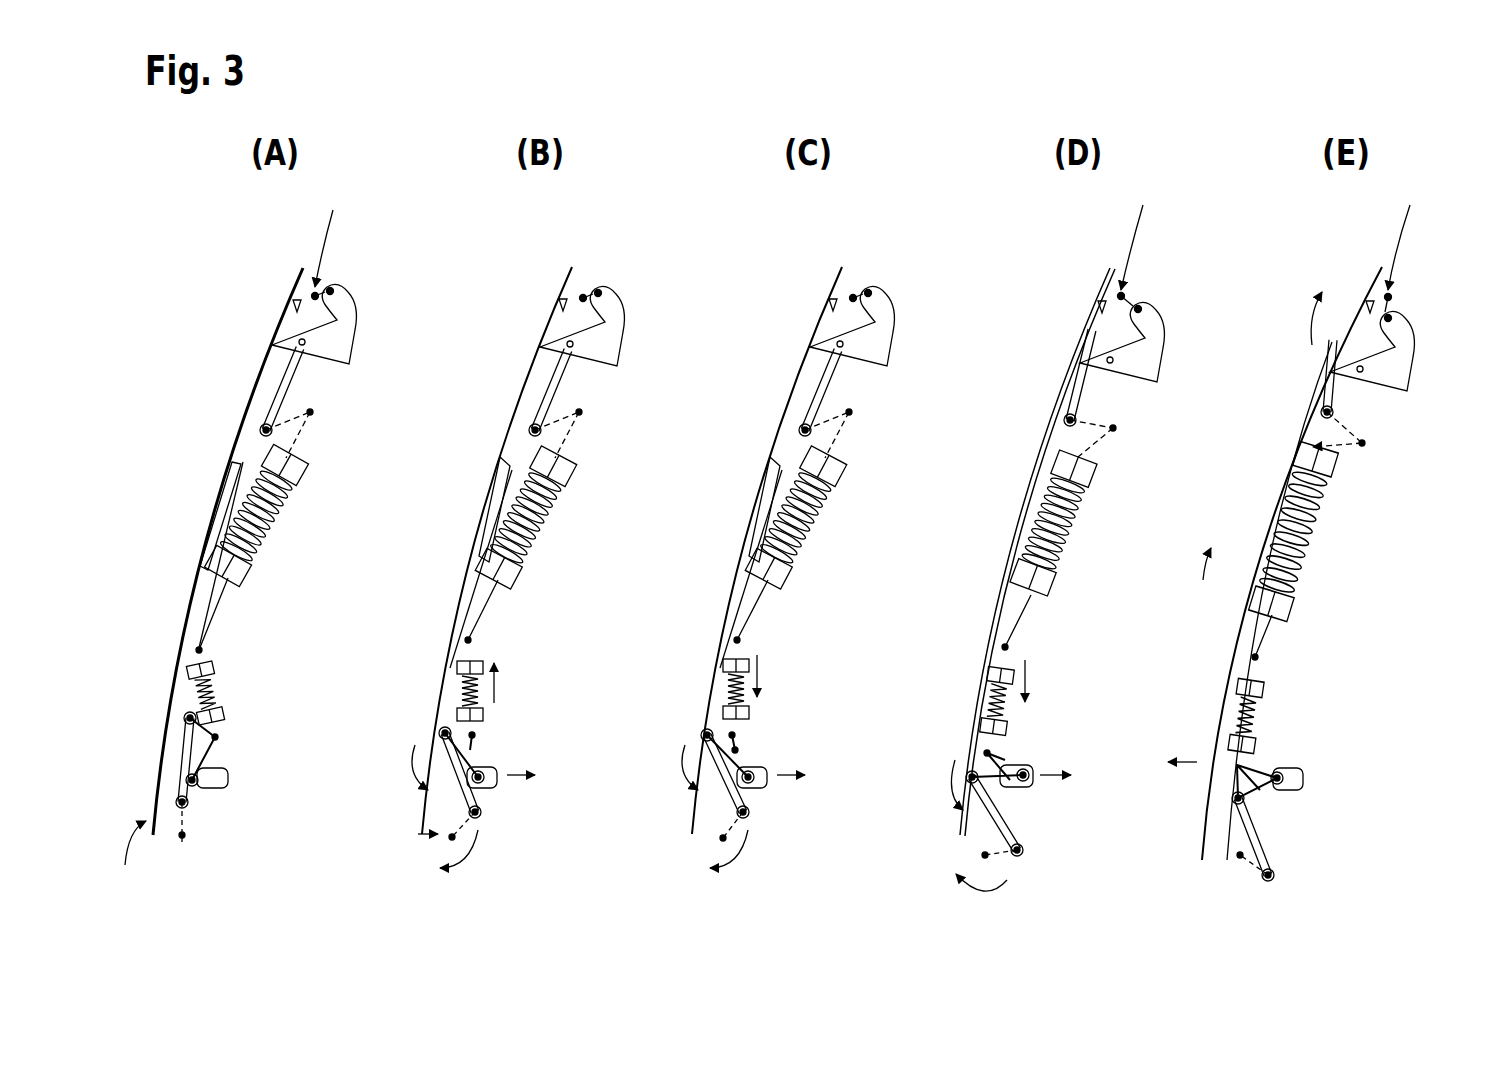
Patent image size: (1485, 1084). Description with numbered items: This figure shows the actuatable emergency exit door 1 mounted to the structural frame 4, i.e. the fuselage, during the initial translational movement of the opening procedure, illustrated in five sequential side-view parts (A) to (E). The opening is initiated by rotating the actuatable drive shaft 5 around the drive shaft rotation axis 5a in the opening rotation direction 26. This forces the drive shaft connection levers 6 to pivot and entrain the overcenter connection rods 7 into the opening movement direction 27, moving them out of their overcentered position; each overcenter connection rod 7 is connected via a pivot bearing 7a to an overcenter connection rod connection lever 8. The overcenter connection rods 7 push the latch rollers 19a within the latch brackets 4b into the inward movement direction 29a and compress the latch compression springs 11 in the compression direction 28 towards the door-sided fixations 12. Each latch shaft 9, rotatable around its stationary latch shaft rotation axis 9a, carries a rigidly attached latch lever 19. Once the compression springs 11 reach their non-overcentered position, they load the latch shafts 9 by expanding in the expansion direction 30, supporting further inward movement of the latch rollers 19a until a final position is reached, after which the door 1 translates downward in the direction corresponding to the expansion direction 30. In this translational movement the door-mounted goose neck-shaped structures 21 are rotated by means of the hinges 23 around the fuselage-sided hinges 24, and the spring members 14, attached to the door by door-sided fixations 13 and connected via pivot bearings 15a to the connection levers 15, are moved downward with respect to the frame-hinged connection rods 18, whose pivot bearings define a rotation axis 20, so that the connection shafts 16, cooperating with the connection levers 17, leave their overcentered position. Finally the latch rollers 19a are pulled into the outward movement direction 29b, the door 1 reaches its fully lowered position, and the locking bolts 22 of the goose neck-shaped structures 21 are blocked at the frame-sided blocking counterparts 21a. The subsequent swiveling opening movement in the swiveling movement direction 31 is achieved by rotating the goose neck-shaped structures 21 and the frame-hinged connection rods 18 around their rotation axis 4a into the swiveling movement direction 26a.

The actuatable emergency exit door 1 is at (198, 497).
The structural frame 4 is at (298, 268).
The rotation axis 4a is at (292, 334).
The latch bracket 4b is at (232, 784).
The actuatable drive shaft 5 is at (182, 845).
The drive shaft rotation axis 5a is at (418, 834).
The drive shaft connection lever 6 is at (178, 815).
The overcenter connection rod 7 is at (172, 733).
The pivot bearing 7a is at (187, 714).
The overcenter connection rod connection lever 8 is at (170, 735).
The latch shaft 9 is at (218, 742).
The latch shaft rotation axis 9a is at (479, 747).
The latch compression spring 11 is at (222, 688).
The door-sided fixation 12 is at (197, 647).
The door-sided fixation 13 is at (226, 582).
The spring member 14 is at (289, 518).
The connection lever 15 is at (277, 448).
The pivot bearing 15a is at (1068, 446).
The connection shaft 16 is at (305, 430).
The connection lever 17 is at (313, 411).
The frame-hinged connection rod 18 is at (279, 381).
The latch lever 19 is at (205, 764).
The latch roller 19a is at (198, 792).
The rotation axis 20 is at (261, 425).
The door-mounted goose neck-shaped structure 21 is at (352, 356).
The frame-sided blocking counterpart 21a is at (288, 292).
The locking bolt 22 is at (336, 291).
The hinge 23 is at (320, 294).
The fuselage-sided hinge 24 is at (869, 231).
The opening rotation direction 26 is at (128, 862).
The swiveling movement direction 26a is at (1310, 350).
The opening movement direction 27 is at (408, 768).
The compression direction 28 is at (498, 683).
The inward movement direction 29a is at (528, 765).
The outward movement direction 29b is at (1195, 760).
The expansion direction 30 is at (765, 682).
The swiveling movement direction 31 is at (1235, 572).